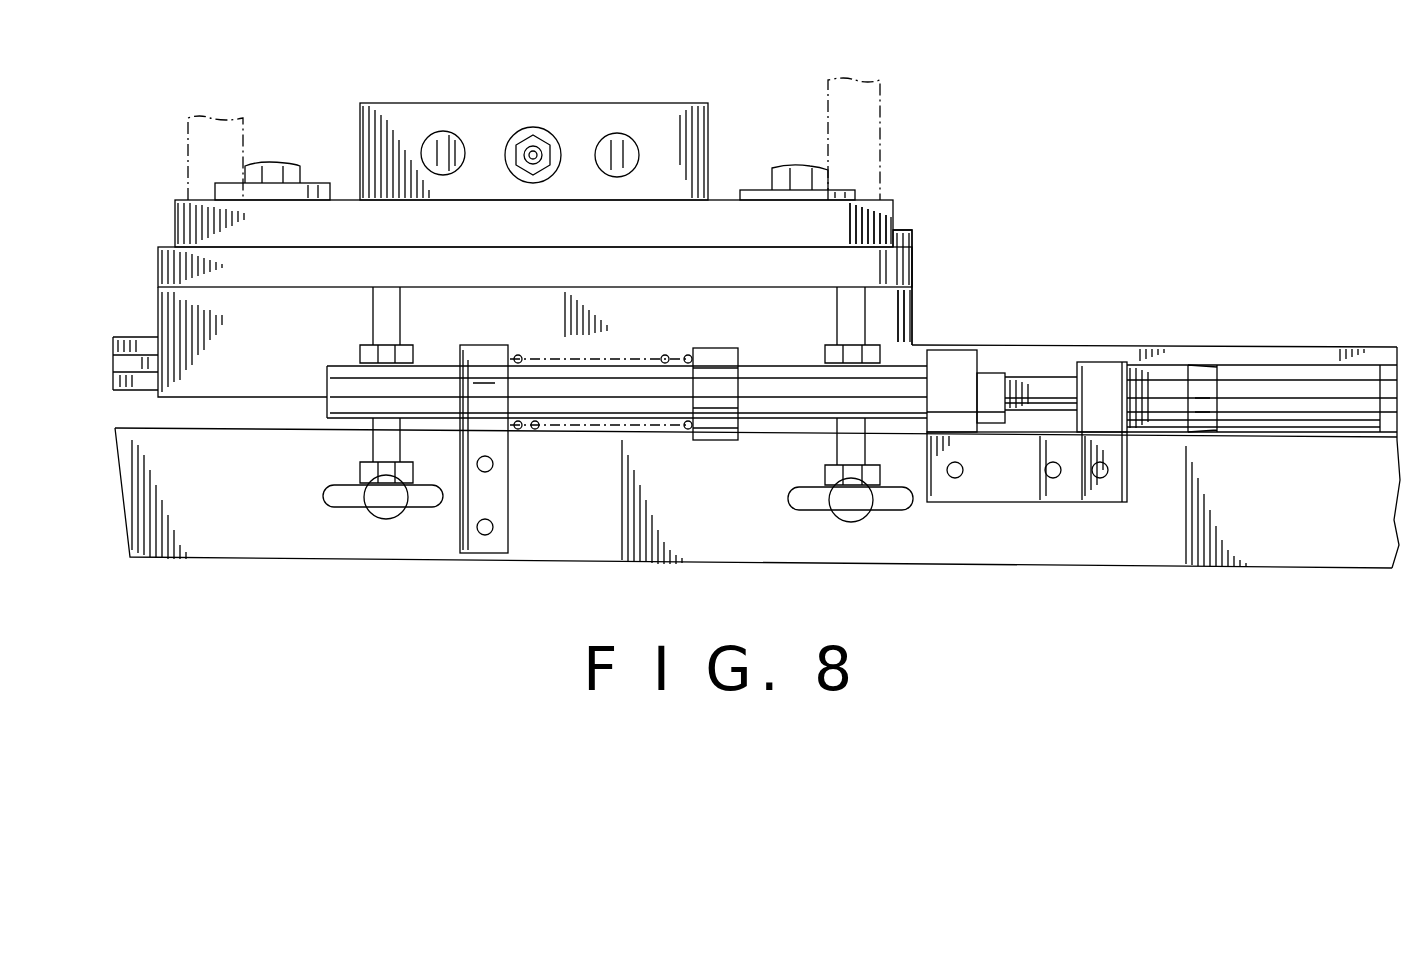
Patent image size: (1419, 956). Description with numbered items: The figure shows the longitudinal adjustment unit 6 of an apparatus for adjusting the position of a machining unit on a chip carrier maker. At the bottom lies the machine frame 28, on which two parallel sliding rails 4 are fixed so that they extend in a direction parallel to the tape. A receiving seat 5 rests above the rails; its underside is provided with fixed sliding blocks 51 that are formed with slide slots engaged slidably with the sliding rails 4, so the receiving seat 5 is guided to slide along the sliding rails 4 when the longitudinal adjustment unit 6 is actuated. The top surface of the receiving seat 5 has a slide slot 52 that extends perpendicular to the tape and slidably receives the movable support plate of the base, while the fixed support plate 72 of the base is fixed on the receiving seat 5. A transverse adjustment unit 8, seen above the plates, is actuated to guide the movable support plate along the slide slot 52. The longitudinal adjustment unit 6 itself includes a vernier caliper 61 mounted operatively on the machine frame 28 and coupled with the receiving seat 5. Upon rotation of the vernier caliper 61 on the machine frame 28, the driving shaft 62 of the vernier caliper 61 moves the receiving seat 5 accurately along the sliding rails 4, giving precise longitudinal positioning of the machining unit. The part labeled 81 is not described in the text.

The sliding rail 4 is at (143, 335).
The receiving seat 5 is at (898, 265).
The longitudinal adjustment unit 6 is at (967, 512).
The transverse adjustment unit 8 is at (572, 95).
The machine frame 28 is at (1283, 572).
The sliding block 51 is at (897, 328).
The slide slot 52 is at (873, 237).
The vernier caliper 61 is at (1258, 373).
The driving shaft 62 is at (1048, 387).
The fixed support plate 72 is at (722, 218).
The clamp block 81 is at (655, 120).